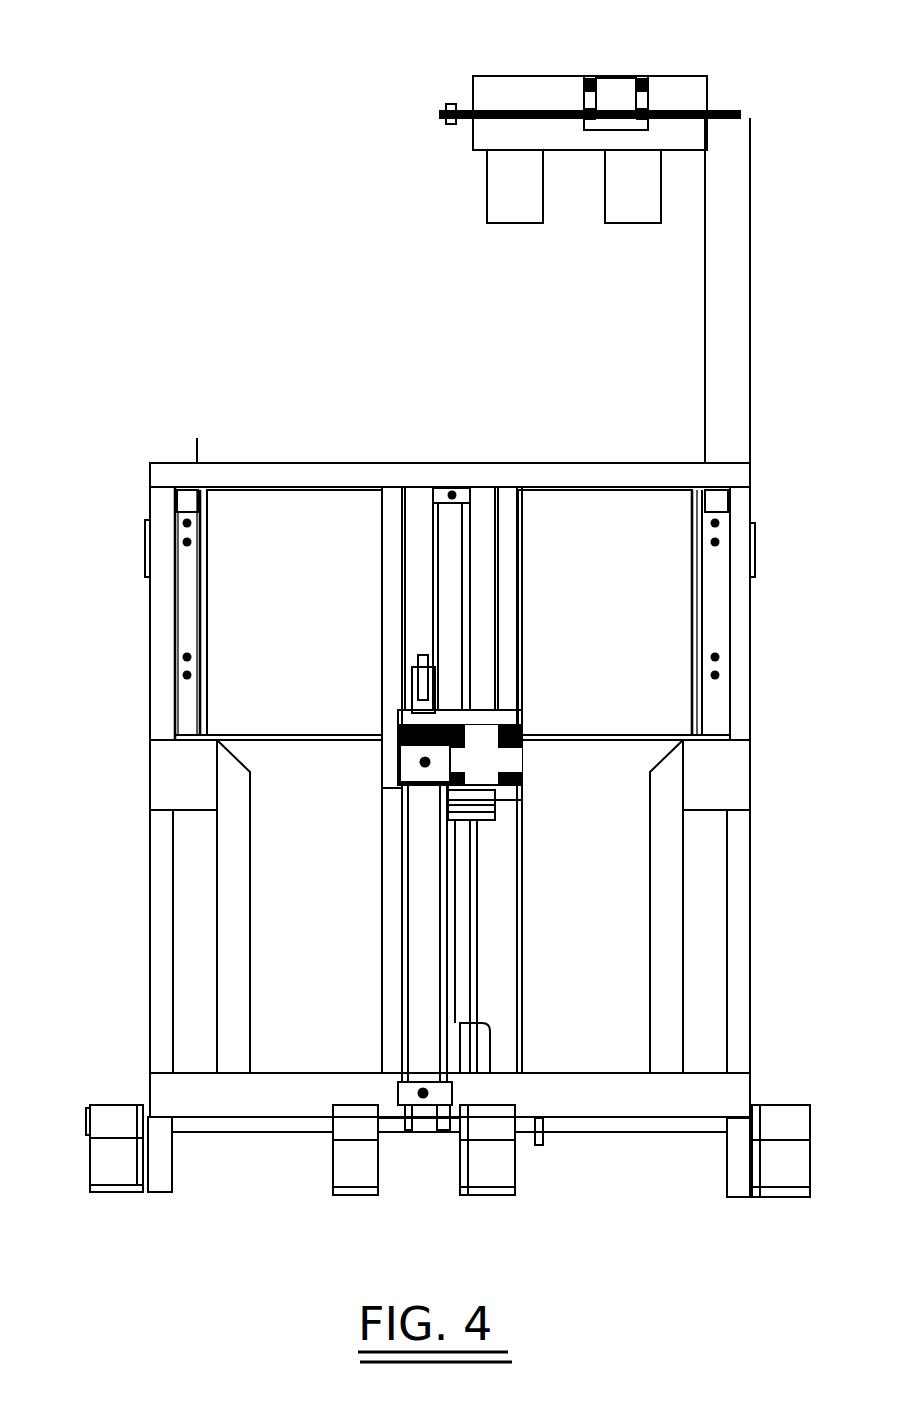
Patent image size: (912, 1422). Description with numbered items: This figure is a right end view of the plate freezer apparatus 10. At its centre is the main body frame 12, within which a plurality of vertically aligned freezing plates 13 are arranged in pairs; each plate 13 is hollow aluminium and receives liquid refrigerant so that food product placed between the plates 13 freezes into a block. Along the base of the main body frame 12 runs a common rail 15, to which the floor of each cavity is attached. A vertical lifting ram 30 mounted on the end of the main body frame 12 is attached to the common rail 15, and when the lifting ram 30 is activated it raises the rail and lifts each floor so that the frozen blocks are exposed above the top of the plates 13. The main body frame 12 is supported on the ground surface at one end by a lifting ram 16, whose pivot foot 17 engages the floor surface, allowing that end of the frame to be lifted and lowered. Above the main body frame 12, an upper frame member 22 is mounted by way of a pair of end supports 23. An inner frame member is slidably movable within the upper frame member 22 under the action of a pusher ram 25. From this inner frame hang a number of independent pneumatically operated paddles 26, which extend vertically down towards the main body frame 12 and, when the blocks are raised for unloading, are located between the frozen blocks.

The plate freezer apparatus 10 is at (205, 248).
The main body frame 12 is at (162, 618).
The freezing plates 13 is at (308, 638).
The common rail 15 is at (478, 1053).
The lifting ram 16 is at (427, 968).
The pivot foot 17 is at (360, 1175).
The upper frame member 22 is at (706, 96).
The end supports 23 is at (737, 368).
The pusher ram 25 is at (620, 98).
The paddles 26 is at (620, 228).
The lifting ram 30 is at (452, 555).